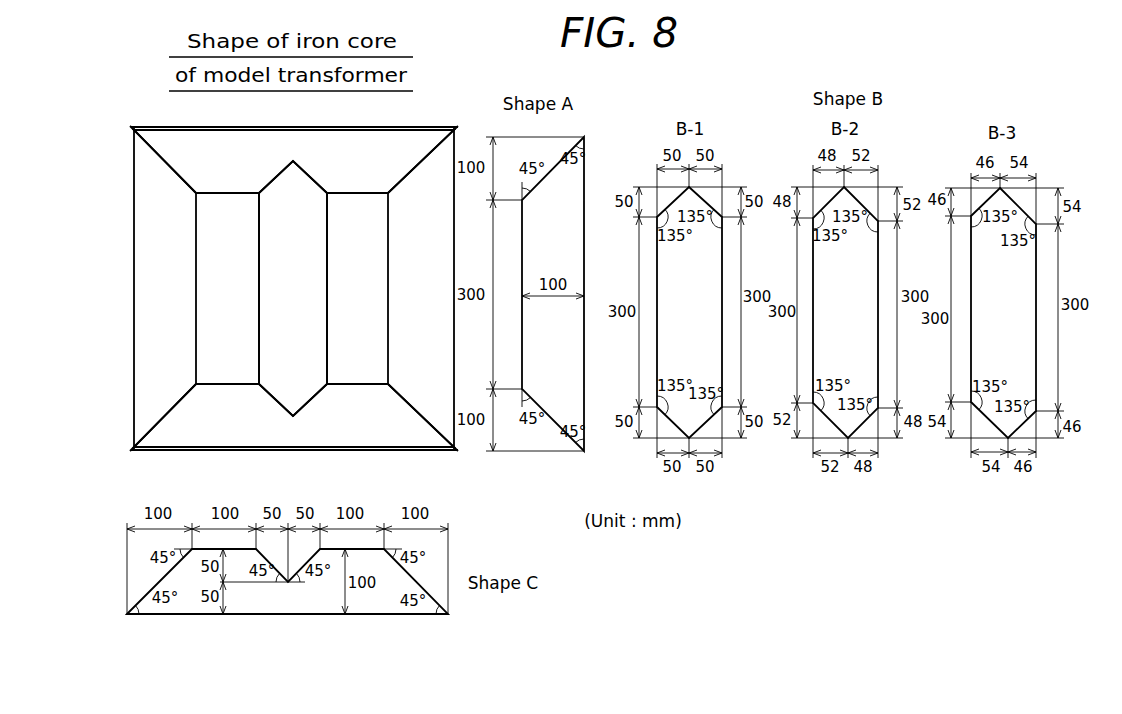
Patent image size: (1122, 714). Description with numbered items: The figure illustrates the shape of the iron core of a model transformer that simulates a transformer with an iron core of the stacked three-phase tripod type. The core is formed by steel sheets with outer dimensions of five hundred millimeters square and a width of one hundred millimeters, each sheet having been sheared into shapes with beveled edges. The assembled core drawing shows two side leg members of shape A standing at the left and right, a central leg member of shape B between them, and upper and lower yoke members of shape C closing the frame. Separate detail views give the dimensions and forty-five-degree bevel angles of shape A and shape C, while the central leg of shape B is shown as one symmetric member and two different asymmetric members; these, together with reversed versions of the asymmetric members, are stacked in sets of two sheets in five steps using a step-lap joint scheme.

The shape A member A is at (291, 288).
The central leg member (shape B) B is at (293, 288).
The shape C member C is at (294, 288).